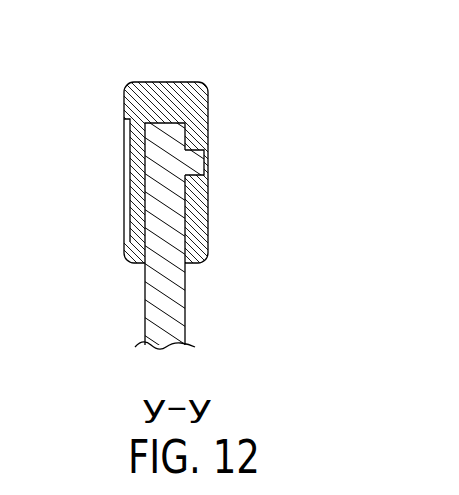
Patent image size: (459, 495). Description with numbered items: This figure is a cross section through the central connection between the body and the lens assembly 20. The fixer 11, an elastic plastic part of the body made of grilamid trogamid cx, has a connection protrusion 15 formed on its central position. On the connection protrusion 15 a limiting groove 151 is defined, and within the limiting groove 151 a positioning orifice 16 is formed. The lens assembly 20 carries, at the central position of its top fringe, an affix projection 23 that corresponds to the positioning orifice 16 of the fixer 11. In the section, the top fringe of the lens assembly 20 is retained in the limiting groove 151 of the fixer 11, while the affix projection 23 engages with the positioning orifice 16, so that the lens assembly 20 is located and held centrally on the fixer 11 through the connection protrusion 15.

The fixer 11 is at (187, 92).
The limiting groove 151 is at (124, 103).
The connection protrusion 15 is at (125, 212).
The lens assembly 20 is at (130, 174).
The affix projection 23 is at (206, 159).
The positioning orifice 16 is at (208, 175).